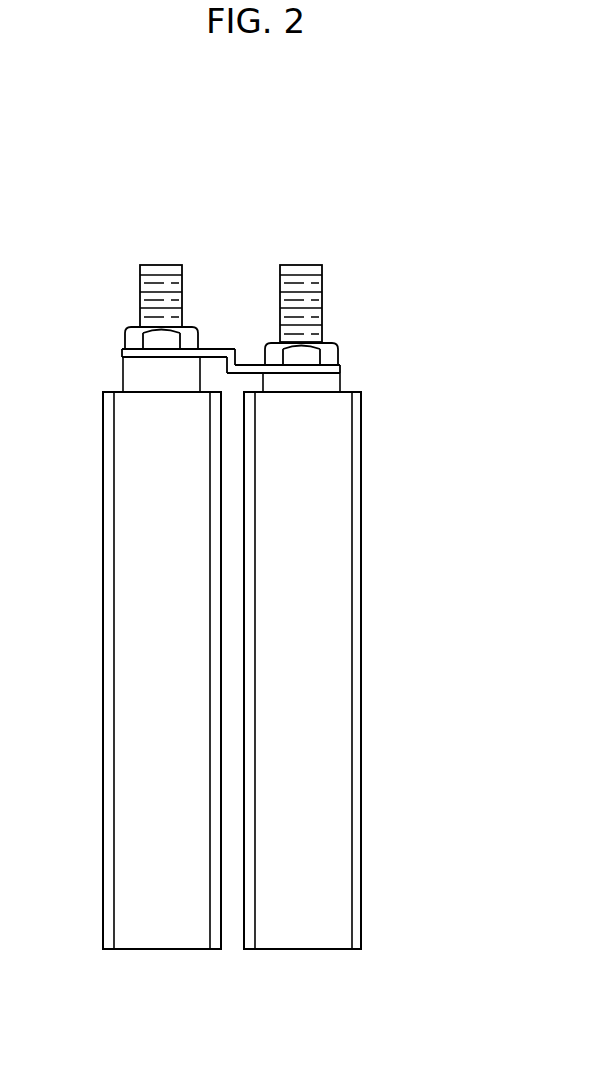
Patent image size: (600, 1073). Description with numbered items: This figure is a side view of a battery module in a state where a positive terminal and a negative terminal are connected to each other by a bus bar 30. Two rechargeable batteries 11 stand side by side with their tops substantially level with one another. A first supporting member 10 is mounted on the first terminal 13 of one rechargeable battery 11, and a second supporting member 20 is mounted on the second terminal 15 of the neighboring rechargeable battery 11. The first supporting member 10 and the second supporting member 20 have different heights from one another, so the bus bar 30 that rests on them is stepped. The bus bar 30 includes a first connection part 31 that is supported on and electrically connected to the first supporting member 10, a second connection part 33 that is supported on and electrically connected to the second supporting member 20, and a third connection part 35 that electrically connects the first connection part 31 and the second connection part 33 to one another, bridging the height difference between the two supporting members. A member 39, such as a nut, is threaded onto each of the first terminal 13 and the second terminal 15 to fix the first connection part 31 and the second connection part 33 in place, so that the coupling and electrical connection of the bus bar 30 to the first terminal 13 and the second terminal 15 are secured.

The first supporting member 10 is at (128, 373).
The second supporting member 20 is at (335, 387).
The rechargeable battery 11 is at (128, 641).
The first terminal 13 is at (165, 270).
The second terminal 15 is at (322, 268).
The bus bar 30 is at (231, 272).
The first connection part 31 is at (165, 351).
The second connection part 33 is at (330, 374).
The third connection part 35 is at (245, 366).
The member 39 is at (130, 340).